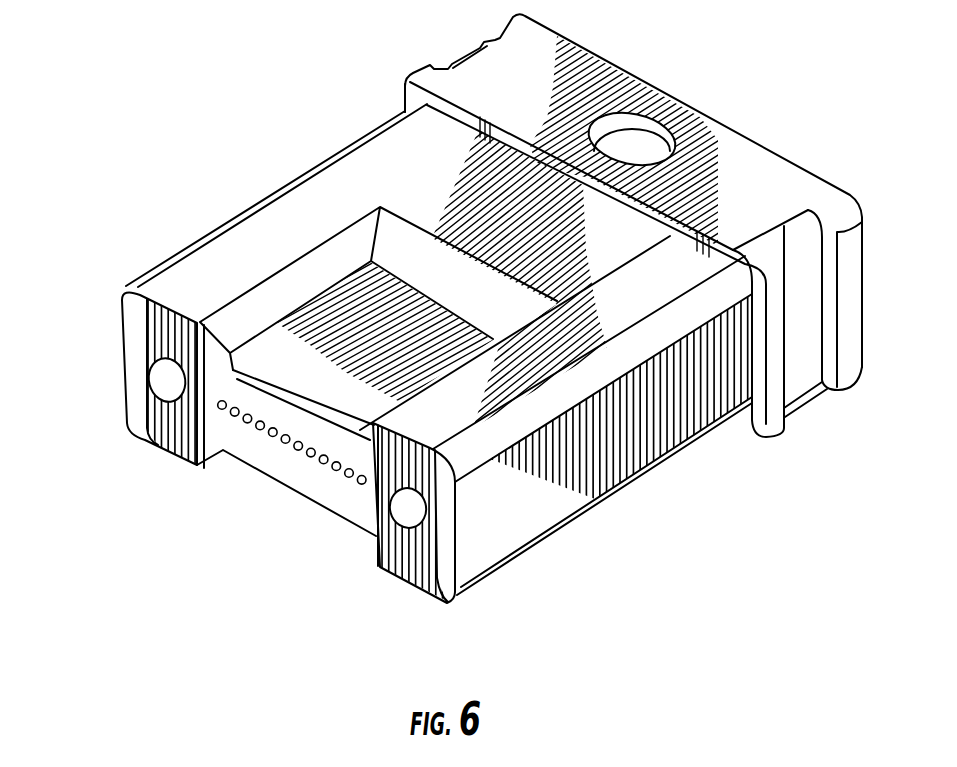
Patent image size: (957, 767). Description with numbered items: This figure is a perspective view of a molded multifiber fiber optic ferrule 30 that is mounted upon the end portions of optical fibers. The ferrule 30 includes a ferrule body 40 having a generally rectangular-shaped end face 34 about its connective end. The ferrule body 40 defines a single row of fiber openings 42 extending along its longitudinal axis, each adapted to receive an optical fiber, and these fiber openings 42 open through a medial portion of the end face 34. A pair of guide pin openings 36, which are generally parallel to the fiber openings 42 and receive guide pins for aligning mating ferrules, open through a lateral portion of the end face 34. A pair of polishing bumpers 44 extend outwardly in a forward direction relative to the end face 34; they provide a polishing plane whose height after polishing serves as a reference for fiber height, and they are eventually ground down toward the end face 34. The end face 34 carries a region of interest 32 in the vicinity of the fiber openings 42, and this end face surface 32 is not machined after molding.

The molded fiber optic ferrule 30 is at (306, 136).
The region of interest 32 is at (315, 430).
The end face 34 is at (287, 473).
The guide pin openings 36 is at (167, 392).
The ferrule body 40 is at (567, 480).
The fiber openings 42 is at (343, 480).
The polishing bumpers 44 is at (137, 328).